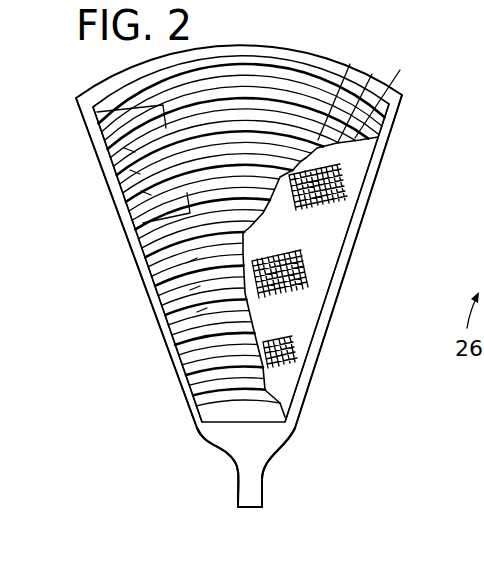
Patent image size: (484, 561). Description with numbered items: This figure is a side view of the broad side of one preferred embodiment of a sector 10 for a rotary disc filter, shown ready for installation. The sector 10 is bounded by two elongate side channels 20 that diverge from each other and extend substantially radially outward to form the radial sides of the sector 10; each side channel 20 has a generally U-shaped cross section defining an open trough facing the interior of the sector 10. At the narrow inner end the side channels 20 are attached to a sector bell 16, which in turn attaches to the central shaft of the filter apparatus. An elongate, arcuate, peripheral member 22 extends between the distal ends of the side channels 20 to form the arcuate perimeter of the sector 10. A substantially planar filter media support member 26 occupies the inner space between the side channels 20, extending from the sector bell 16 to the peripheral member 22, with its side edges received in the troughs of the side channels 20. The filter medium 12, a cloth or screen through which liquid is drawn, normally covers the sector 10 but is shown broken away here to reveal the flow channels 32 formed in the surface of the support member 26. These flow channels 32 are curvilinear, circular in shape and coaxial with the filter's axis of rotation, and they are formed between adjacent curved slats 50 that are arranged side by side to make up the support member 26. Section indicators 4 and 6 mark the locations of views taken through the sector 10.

The sector 10 is at (351, 59).
The filter medium 12 is at (312, 233).
The sector bell 16 is at (255, 443).
The side channels 20 is at (385, 172).
The peripheral member 22 is at (226, 52).
The filter media support member 26 is at (233, 91).
The flow channels 32 is at (393, 82).
The slats 50 is at (305, 146).
The section line 6 is at (100, 125).
The section line 4 is at (130, 282).